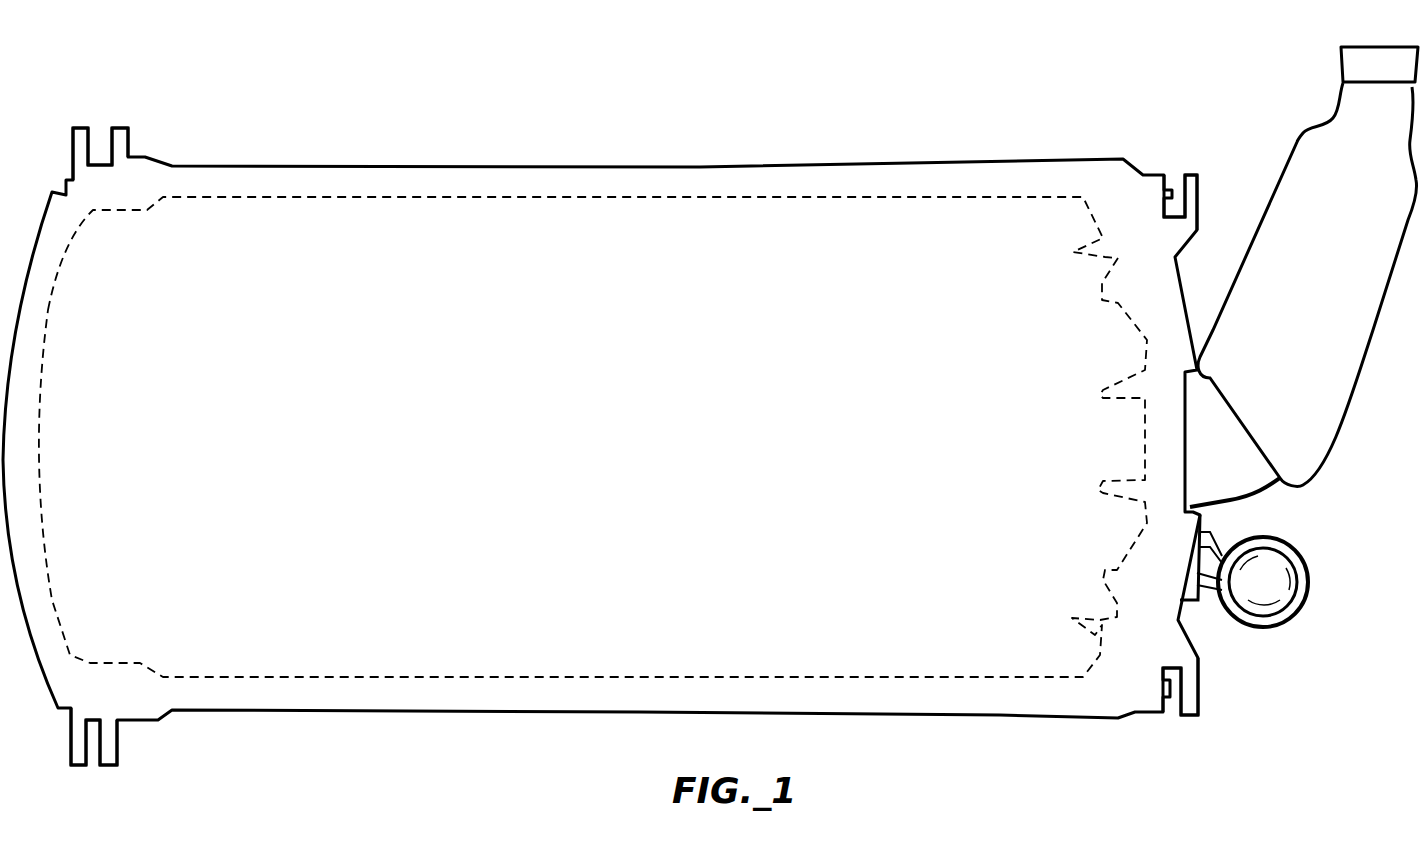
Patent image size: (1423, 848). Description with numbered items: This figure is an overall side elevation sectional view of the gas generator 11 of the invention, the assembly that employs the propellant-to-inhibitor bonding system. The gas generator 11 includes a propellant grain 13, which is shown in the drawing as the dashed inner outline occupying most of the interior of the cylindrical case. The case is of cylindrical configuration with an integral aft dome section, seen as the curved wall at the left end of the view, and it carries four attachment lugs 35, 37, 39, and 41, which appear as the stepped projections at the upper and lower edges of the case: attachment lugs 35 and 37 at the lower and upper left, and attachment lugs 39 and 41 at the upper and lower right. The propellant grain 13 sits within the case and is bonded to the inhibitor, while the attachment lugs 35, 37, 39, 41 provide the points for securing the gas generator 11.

The gas generator assembly 11 is at (596, 131).
The propellant grain 13 is at (428, 213).
The attachment lug 35 is at (118, 742).
The attachment lug 37 is at (130, 143).
The attachment lug 39 is at (1200, 205).
The attachment lug 41 is at (1200, 680).